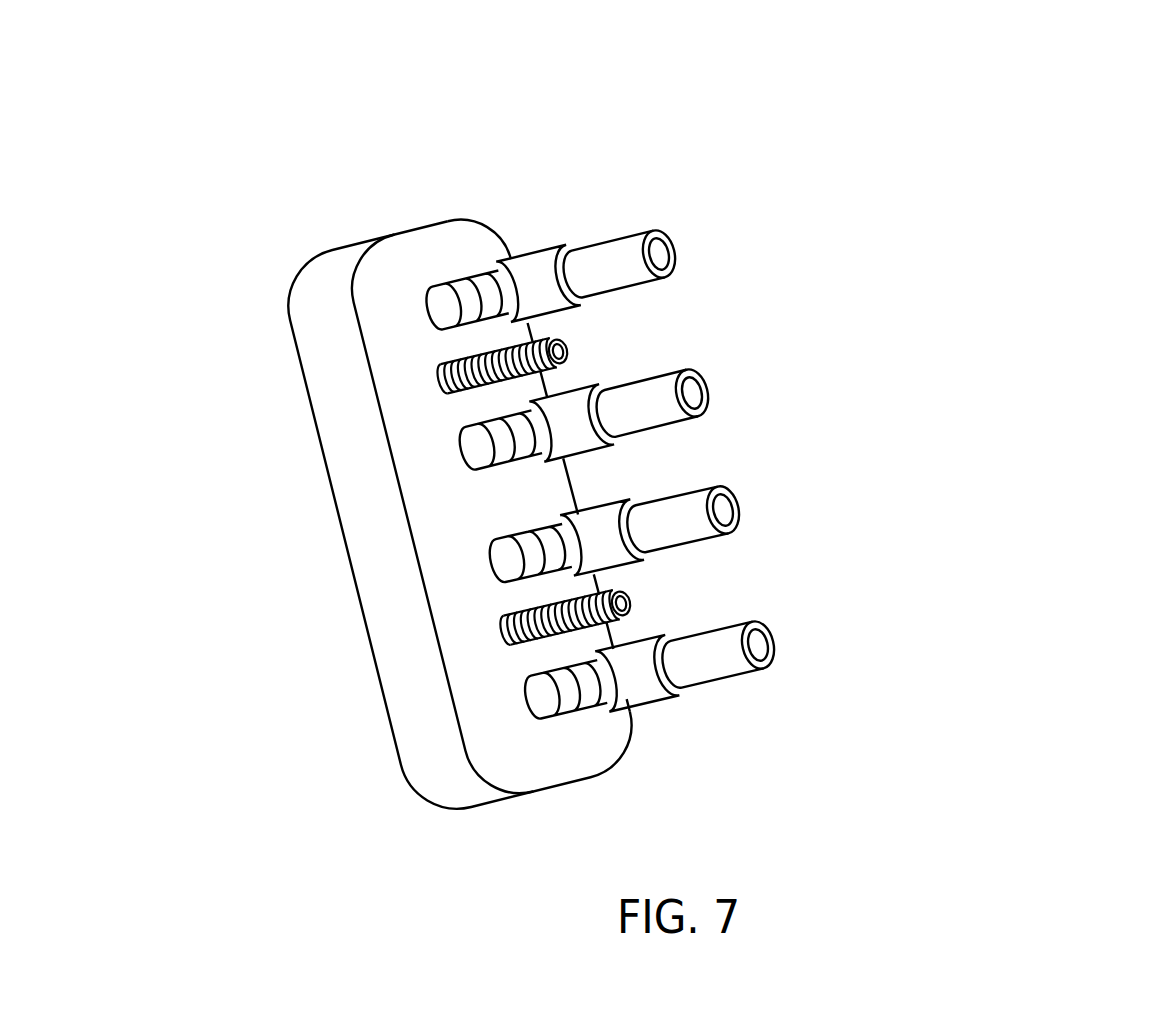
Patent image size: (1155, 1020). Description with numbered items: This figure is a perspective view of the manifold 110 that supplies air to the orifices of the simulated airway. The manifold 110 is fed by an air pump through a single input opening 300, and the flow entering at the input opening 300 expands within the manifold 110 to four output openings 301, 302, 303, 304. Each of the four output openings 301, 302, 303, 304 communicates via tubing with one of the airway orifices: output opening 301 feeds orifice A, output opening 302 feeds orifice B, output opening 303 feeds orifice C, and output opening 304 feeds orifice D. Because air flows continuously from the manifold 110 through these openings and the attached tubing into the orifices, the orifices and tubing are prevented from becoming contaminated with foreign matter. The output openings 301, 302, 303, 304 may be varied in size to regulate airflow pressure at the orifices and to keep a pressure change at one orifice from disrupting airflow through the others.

The manifold 110 is at (672, 417).
The single input opening 300 is at (352, 567).
The output opening 301 is at (659, 254).
The output opening 302 is at (692, 393).
The output opening 303 is at (723, 510).
The output opening 304 is at (758, 645).